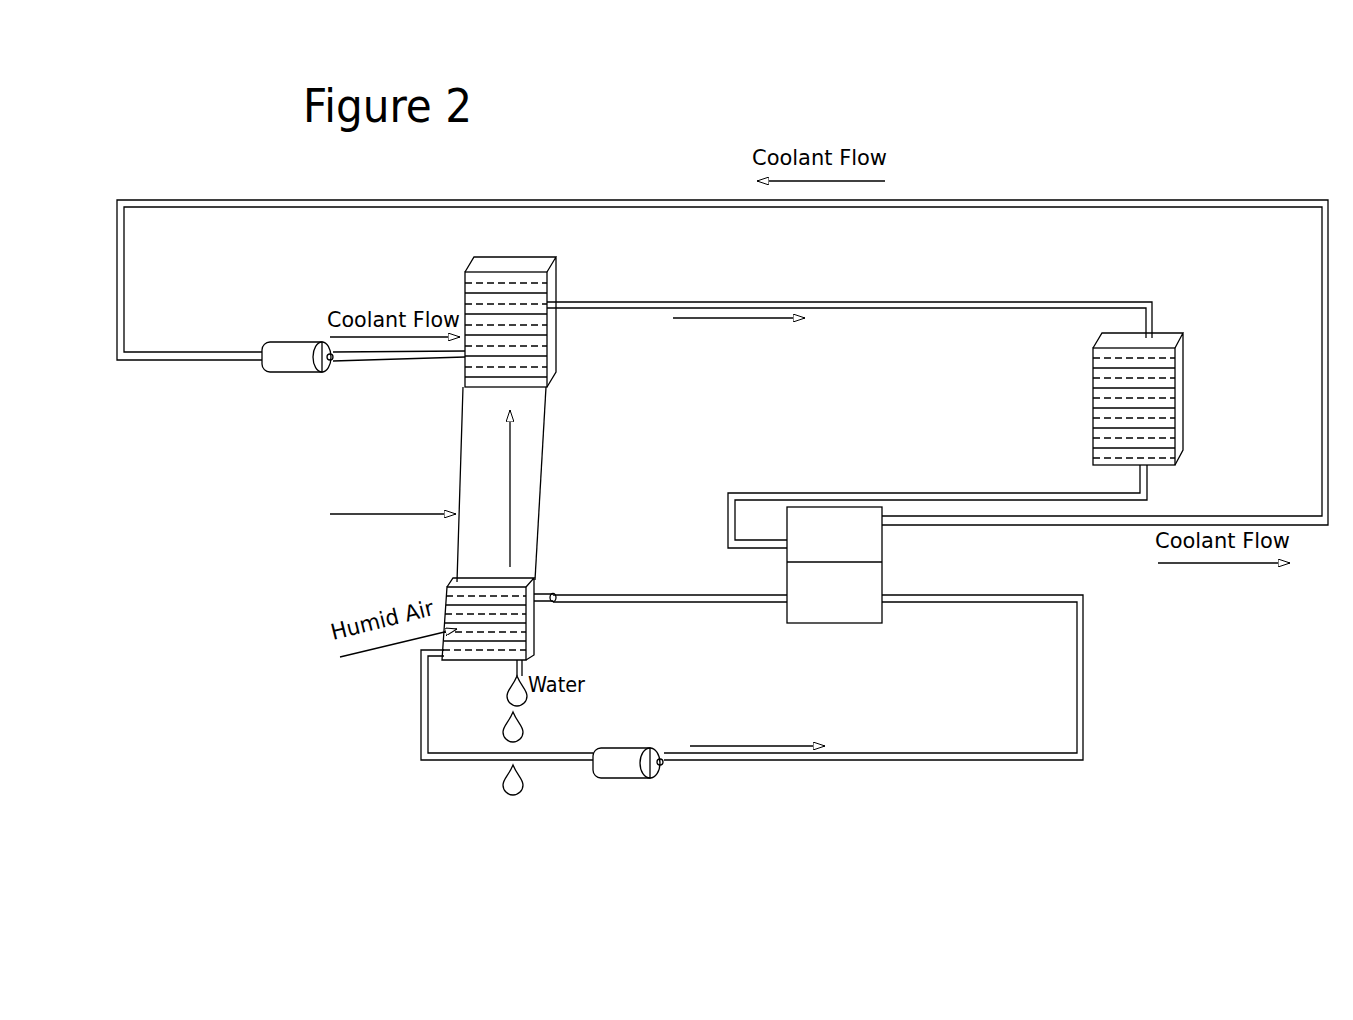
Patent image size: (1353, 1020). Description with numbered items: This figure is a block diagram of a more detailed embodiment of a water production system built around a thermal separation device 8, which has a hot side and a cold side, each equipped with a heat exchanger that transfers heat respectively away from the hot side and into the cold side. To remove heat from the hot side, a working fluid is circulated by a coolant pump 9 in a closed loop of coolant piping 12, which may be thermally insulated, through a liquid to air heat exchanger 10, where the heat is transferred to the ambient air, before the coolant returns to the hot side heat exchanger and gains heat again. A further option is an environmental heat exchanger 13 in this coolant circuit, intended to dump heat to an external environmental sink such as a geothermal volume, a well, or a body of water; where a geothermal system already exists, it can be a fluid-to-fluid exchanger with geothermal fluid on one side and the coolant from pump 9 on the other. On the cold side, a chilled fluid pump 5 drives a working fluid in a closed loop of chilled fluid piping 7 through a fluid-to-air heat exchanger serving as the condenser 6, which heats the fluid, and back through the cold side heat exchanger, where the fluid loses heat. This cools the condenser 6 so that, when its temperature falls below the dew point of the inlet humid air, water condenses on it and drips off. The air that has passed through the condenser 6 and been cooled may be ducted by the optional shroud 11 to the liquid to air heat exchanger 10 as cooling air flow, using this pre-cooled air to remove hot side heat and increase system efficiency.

The chilled fluid pump 5 is at (655, 755).
The fluid-to-air heat exchanger 6 is at (546, 619).
The chilled fluid piping 7 is at (793, 677).
The thermal separation device 8 is at (864, 585).
The coolant pump 9 is at (249, 356).
The liquid to air heat exchanger 10 is at (567, 305).
The optional shroud 11 is at (494, 475).
The coolant piping 12 is at (849, 289).
The environmental heat exchanger 13 is at (1192, 391).